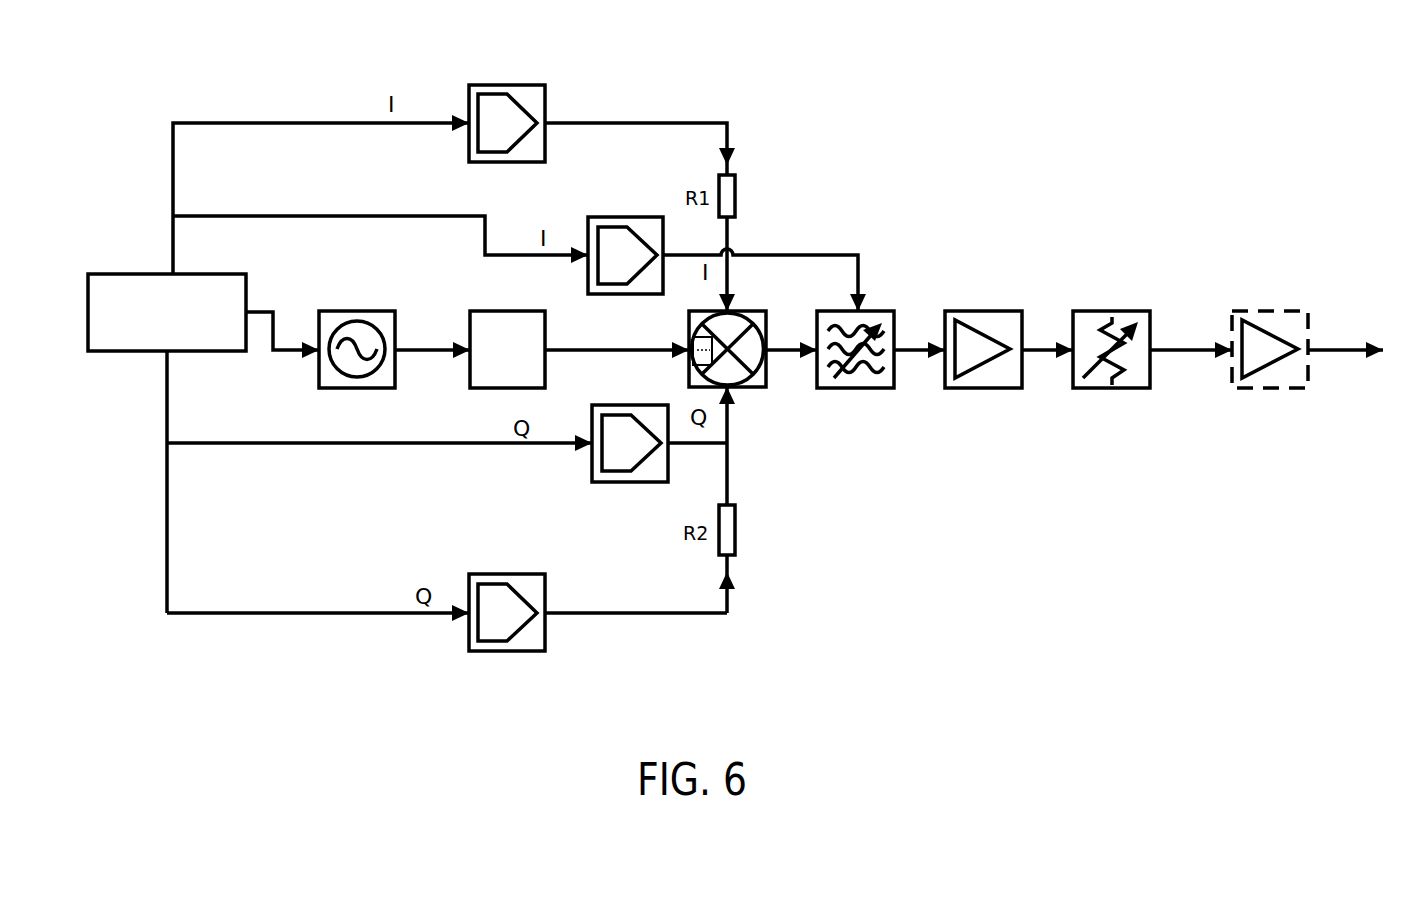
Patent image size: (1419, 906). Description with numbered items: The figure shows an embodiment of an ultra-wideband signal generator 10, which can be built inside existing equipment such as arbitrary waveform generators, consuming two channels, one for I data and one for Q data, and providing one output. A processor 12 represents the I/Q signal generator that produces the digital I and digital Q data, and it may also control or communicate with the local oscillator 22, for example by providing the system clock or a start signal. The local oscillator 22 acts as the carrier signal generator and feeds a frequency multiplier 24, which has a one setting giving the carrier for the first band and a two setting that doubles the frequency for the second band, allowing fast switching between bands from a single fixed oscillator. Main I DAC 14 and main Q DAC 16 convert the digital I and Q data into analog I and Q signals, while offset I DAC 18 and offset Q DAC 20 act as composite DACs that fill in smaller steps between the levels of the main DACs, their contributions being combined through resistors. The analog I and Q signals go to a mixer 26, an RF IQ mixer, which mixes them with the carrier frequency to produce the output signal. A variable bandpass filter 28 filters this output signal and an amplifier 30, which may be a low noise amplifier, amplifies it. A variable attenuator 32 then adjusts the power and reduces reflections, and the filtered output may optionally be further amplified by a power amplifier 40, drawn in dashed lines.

The ultra-wideband signal generator 10 is at (928, 66).
The processor 12 is at (163, 273).
The main I DAC 14 is at (623, 217).
The main Q DAC 16 is at (613, 405).
The offset I DAC 18 is at (508, 85).
The offset Q DAC 20 is at (505, 574).
The local oscillator 22 is at (357, 311).
The frequency multiplier 24 is at (505, 311).
The mixer 26 is at (766, 387).
The bandpass filter 28 is at (878, 311).
The amplifier 30 is at (1003, 311).
The variable attenuator 32 is at (1125, 311).
The power amplifier 40 is at (1280, 311).